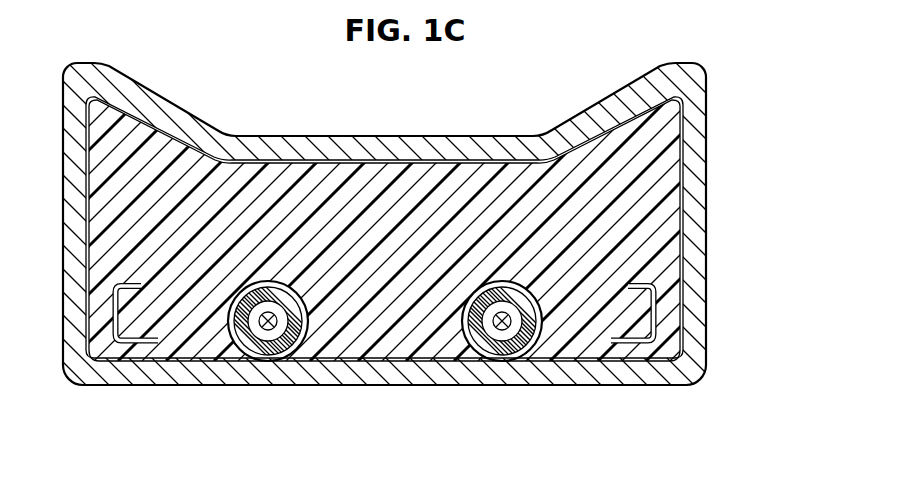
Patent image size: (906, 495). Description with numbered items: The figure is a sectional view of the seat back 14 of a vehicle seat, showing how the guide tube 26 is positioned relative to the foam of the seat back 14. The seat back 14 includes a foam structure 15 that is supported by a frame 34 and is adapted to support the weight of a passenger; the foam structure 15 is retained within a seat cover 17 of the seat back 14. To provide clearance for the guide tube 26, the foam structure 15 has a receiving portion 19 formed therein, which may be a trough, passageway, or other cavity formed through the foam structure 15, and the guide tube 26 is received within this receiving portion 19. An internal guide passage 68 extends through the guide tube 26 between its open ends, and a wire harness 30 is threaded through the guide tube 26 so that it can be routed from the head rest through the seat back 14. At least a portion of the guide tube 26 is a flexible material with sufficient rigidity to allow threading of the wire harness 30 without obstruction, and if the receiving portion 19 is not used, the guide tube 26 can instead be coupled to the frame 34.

The seat back 14 is at (706, 83).
The foam structure 15 is at (533, 187).
The seat cover 17 is at (706, 224).
The receiving portion 19 is at (227, 336).
The guide tube 26 is at (253, 347).
The wire harness 30 is at (267, 332).
The frame 34 is at (119, 309).
The internal guide passage 68 is at (280, 331).